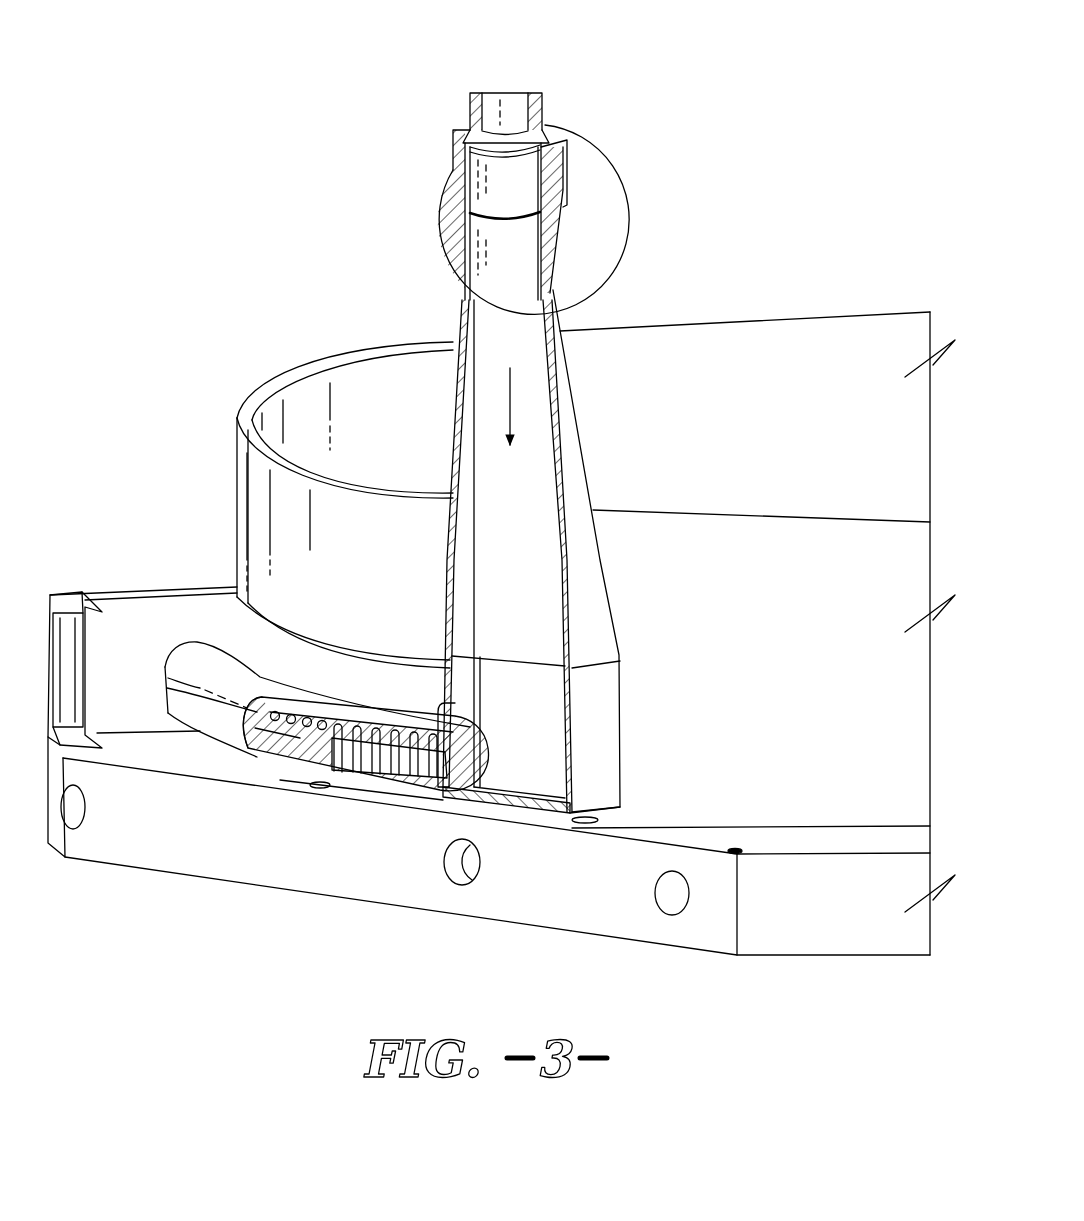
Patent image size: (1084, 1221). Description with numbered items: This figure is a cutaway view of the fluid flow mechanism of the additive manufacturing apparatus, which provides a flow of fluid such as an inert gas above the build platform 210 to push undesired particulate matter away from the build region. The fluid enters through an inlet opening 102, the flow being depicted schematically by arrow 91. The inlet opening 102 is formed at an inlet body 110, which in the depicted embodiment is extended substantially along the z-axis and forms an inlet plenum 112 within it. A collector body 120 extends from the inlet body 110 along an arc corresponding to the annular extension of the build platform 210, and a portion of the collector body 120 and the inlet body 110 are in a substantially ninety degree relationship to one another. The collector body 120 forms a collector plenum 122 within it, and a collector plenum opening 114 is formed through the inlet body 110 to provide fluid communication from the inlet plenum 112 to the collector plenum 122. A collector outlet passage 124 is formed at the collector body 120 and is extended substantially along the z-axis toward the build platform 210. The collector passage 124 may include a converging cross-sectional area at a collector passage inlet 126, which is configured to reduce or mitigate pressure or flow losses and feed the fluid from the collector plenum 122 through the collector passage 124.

The arrow 91 is at (512, 392).
The inlet opening 102 is at (510, 70).
The inlet body 110 is at (587, 590).
The inlet plenum 112 is at (540, 591).
The collector plenum opening 114 is at (447, 748).
The collector body 120 is at (200, 670).
The collector plenum 122 is at (346, 718).
The collector outlet passage 124 is at (296, 760).
The collector passage inlet 126 is at (392, 726).
The build platform 210 is at (802, 930).